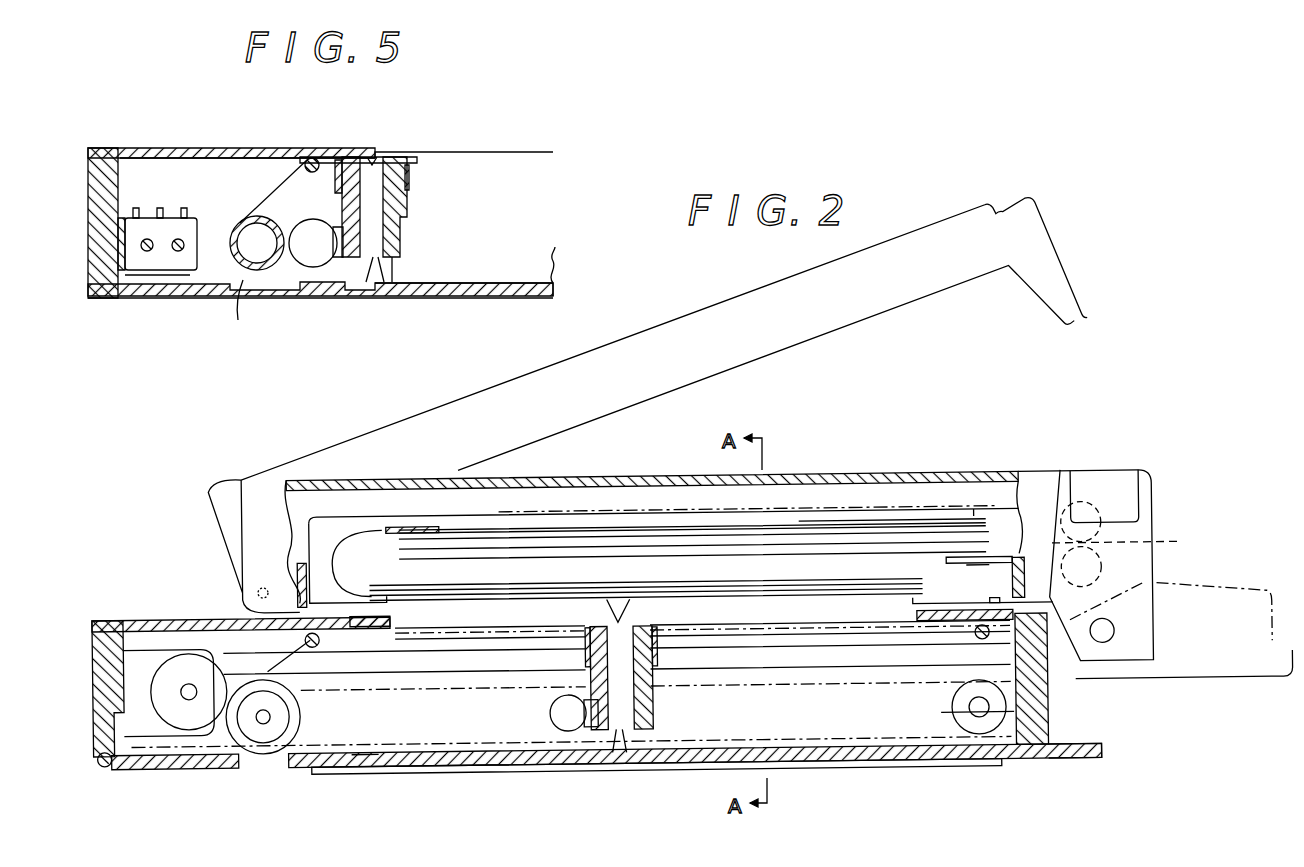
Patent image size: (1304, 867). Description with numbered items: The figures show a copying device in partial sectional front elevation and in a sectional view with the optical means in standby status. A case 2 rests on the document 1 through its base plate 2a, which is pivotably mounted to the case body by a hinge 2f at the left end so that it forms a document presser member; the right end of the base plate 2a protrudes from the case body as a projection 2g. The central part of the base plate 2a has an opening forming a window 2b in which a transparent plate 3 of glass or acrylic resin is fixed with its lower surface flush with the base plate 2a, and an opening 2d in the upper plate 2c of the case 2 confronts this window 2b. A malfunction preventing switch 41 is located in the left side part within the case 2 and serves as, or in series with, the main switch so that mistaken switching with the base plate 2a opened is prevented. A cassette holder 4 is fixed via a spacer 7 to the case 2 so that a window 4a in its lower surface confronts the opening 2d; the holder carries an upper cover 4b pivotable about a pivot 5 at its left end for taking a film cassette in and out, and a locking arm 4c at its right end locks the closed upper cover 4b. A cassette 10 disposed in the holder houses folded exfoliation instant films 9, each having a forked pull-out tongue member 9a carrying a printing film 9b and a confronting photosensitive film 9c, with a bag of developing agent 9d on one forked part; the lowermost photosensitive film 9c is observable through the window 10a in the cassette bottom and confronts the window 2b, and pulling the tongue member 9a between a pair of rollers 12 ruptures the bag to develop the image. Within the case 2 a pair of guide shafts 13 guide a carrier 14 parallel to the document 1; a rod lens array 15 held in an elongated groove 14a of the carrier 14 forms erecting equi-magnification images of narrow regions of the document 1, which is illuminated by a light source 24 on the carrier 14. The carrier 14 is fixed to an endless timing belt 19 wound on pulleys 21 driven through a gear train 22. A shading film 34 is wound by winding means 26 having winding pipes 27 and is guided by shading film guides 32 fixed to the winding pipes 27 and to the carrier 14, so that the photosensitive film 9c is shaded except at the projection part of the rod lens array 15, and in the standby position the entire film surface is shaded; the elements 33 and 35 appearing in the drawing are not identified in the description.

In FIG. 2, the document 1 is at (657, 786).
In FIG. 5, the case 2 is at (88, 186).
In FIG. 2, the case 2 is at (105, 685).
In FIG. 5, the base plate 2a is at (168, 297).
In FIG. 2, the base plate 2a is at (190, 765).
In FIG. 2, the window 2b is at (382, 757).
In FIG. 5, the upper plate 2c is at (178, 148).
In FIG. 2, the upper plate 2c is at (150, 620).
In FIG. 5, the opening 2d is at (397, 152).
In FIG. 2, the opening 2d is at (397, 624).
In FIG. 2, the hinge 2f is at (103, 770).
In FIG. 2, the projection 2g is at (1082, 760).
In FIG. 5, the transparent plate 3 is at (433, 293).
In FIG. 2, the transparent plate 3 is at (757, 755).
In FIG. 2, the cassette holder 4 is at (250, 518).
In FIG. 2, the window 4a is at (388, 620).
In FIG. 2, the upper cover 4b is at (940, 478).
In FIG. 2, the locking arm 4c is at (1153, 488).
In FIG. 2, the pivot 5 is at (253, 597).
In FIG. 2, the spacer 7 is at (305, 606).
In FIG. 2, the instant film 9 is at (800, 513).
In FIG. 2, the pull-out tongue member 9a is at (1183, 542).
In FIG. 2, the printing film 9b is at (580, 527).
In FIG. 2, the photosensitive film 9c is at (793, 597).
In FIG. 2, the developing agent bag 9d is at (413, 528).
In FIG. 2, the cassette 10 is at (857, 508).
In FIG. 2, the window 10a is at (903, 603).
In FIG. 2, the rollers 12 is at (1082, 503).
In FIG. 2, the guide shafts 13 is at (723, 663).
In FIG. 5, the carrier 14 is at (383, 262).
In FIG. 2, the carrier 14 is at (640, 697).
In FIG. 2, the elongated groove 14a is at (640, 628).
In FIG. 2, the rod lens array 15 is at (590, 628).
In FIG. 2, the timing belt 19 is at (808, 770).
In FIG. 2, the pulleys 21 is at (258, 740).
In FIG. 2, the gear train 22 is at (133, 675).
In FIG. 5, the light source 24 is at (318, 258).
In FIG. 2, the light source 24 is at (550, 713).
In FIG. 5, the winding means 26 is at (243, 276).
In FIG. 5, the winding pipe 27 is at (272, 270).
In FIG. 5, the shading film guides 32 is at (312, 158).
In FIG. 2, the shading film guides 32 is at (310, 650).
In FIG. 5, the bushing 33 is at (337, 187).
In FIG. 2, the bushing 33 is at (587, 655).
In FIG. 5, the shading film 34 is at (500, 152).
In FIG. 2, the shading film 34 is at (282, 662).
In FIG. 2, the ribbon 35 is at (800, 650).
In FIG. 5, the malfunction preventing switch 41 is at (122, 245).